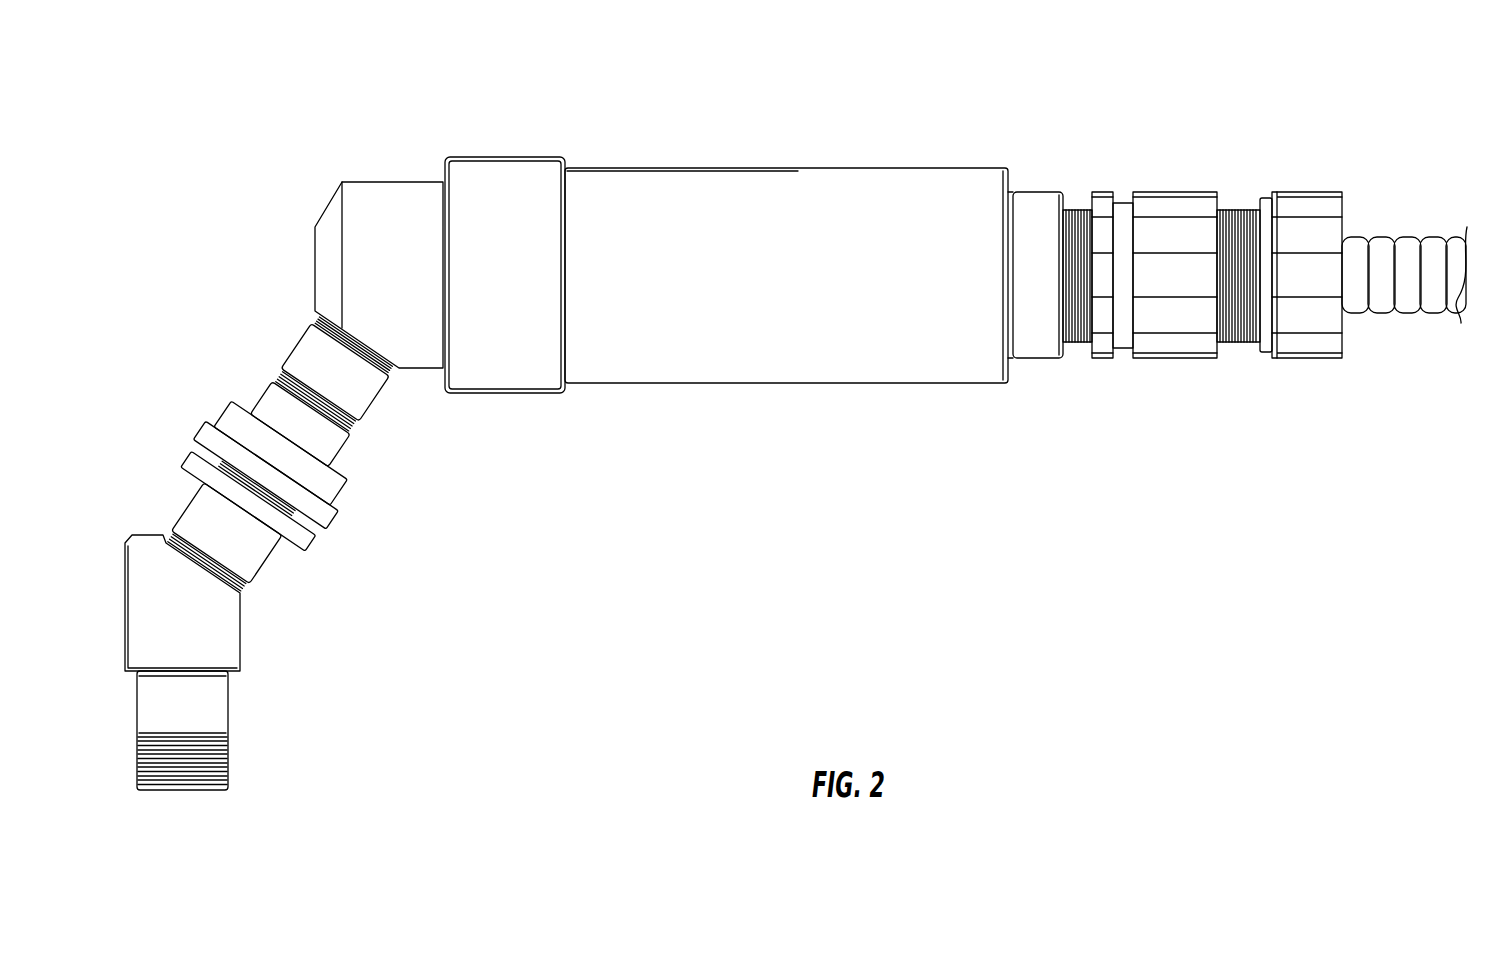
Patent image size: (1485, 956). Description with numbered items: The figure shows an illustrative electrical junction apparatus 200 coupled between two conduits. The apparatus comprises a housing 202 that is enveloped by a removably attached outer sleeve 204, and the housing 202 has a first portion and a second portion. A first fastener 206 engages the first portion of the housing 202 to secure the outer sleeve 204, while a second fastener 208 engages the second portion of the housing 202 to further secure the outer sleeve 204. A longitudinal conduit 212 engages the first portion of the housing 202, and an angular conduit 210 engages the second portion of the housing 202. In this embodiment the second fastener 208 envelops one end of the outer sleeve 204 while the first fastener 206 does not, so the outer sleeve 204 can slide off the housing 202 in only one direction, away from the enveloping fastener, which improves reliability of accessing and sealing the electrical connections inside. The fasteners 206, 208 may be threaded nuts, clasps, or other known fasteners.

The electrical junction apparatus 200 is at (256, 121).
The housing 202 is at (405, 180).
The outer sleeve 204 is at (757, 168).
The first fastener 206 is at (1035, 191).
The second fastener 208 is at (519, 157).
The angular conduit 210 is at (190, 409).
The longitudinal conduit 212 is at (1305, 189).